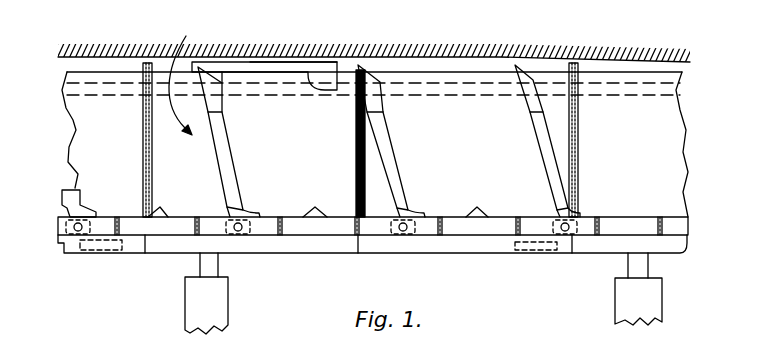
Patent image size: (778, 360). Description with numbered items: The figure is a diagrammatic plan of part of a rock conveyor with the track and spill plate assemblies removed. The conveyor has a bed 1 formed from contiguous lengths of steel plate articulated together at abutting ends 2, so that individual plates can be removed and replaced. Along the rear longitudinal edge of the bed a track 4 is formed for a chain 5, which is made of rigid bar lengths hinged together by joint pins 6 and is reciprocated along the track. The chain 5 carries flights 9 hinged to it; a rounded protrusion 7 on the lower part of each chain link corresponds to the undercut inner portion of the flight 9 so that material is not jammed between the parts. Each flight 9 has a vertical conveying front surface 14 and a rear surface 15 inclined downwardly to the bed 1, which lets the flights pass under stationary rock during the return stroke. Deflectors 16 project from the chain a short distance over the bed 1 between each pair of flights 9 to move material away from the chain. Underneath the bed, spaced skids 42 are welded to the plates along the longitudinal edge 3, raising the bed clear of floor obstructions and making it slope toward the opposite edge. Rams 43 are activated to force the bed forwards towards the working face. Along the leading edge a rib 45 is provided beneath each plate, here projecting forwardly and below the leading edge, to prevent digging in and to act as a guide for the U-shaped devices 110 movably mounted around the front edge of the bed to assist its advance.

The bed 1 is at (268, 69).
The device 110 is at (299, 66).
The abutting ends 2 is at (152, 36).
The longitudinal edge 3 is at (161, 249).
The track 4 is at (373, 252).
The chain 5 is at (336, 230).
The joint pins 6 is at (440, 226).
The rounded protrusion 7 is at (258, 204).
The flights 9 is at (403, 111).
The conveying front surface 14 is at (188, 74).
The rear surface 15 is at (226, 148).
The deflectors 16 is at (316, 209).
The skids 42 is at (98, 252).
The rams 43 is at (220, 305).
The rib 45 is at (78, 88).